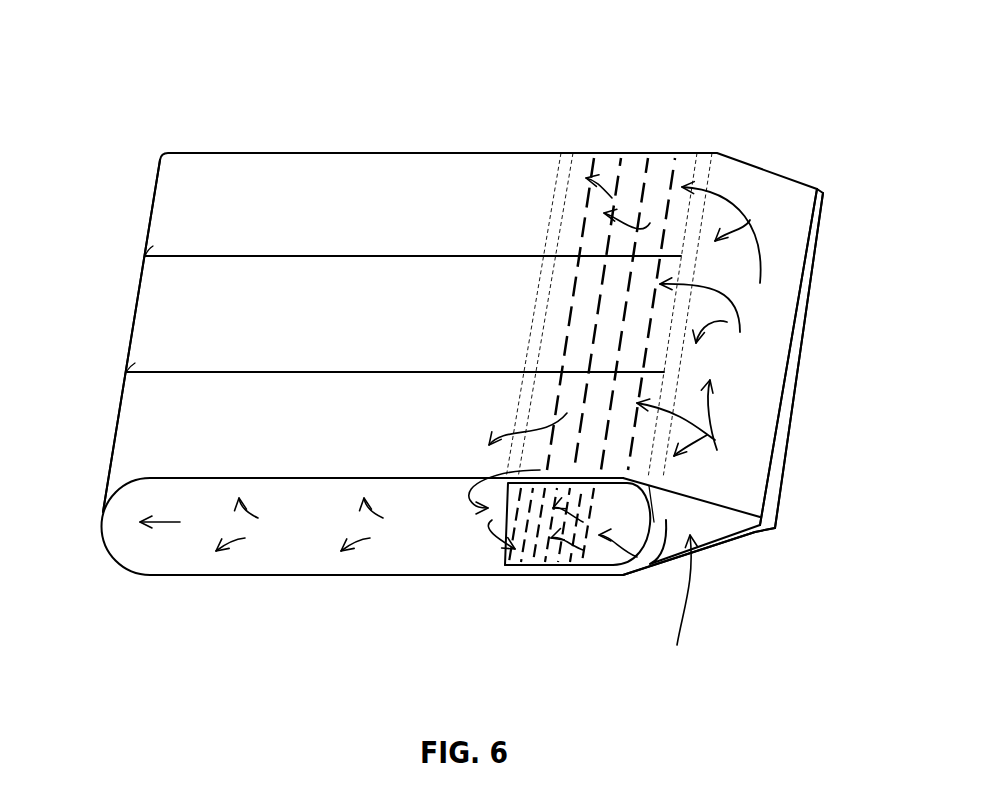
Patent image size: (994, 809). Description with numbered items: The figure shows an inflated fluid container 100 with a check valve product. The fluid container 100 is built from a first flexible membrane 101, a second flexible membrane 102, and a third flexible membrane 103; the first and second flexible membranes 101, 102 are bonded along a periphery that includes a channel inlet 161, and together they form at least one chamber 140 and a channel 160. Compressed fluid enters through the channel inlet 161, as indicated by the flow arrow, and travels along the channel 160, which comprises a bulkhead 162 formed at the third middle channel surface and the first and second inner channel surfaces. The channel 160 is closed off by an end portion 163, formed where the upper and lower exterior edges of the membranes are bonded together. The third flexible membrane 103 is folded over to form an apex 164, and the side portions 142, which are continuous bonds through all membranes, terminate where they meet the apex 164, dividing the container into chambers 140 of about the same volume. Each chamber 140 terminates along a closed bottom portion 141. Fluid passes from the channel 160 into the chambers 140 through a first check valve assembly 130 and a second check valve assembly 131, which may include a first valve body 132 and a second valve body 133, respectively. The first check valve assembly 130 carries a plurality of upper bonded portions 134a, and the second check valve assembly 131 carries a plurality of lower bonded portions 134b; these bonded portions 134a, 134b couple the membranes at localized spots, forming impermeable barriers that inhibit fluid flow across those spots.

The fluid container 100 is at (255, 51).
The first flexible membrane 101 is at (143, 480).
The second flexible membrane 102 is at (387, 577).
The third flexible membrane 103 is at (590, 568).
The first check valve assembly 130 is at (566, 318).
The second check valve assembly 131 is at (578, 575).
The first valve body 132 is at (546, 413).
The second valve body 133 is at (538, 561).
The upper bonded portions 134a is at (647, 178).
The lower bonded portions 134b is at (521, 555).
The chamber 140 is at (325, 557).
The closed bottom portion 141 is at (133, 303).
The side portions 142 is at (310, 256).
The channel 160 is at (752, 533).
The channel inlet 161 is at (705, 543).
The bulkhead 162 is at (665, 518).
The end portion 163 is at (797, 352).
The apex 164 is at (706, 172).